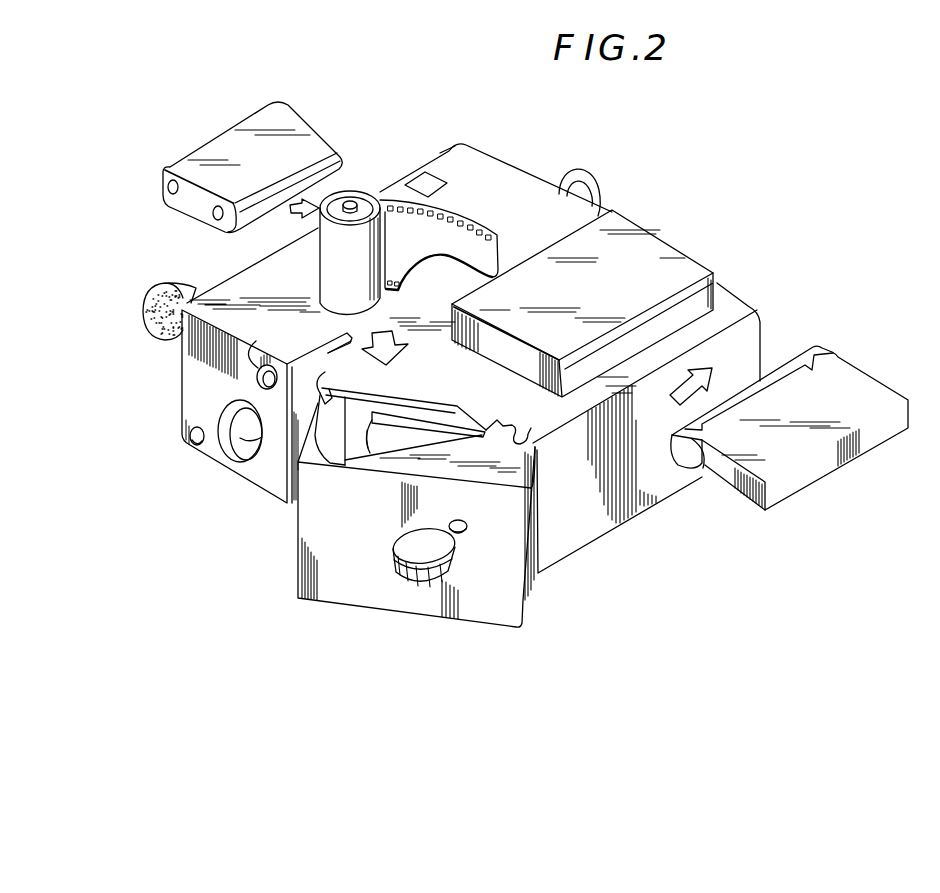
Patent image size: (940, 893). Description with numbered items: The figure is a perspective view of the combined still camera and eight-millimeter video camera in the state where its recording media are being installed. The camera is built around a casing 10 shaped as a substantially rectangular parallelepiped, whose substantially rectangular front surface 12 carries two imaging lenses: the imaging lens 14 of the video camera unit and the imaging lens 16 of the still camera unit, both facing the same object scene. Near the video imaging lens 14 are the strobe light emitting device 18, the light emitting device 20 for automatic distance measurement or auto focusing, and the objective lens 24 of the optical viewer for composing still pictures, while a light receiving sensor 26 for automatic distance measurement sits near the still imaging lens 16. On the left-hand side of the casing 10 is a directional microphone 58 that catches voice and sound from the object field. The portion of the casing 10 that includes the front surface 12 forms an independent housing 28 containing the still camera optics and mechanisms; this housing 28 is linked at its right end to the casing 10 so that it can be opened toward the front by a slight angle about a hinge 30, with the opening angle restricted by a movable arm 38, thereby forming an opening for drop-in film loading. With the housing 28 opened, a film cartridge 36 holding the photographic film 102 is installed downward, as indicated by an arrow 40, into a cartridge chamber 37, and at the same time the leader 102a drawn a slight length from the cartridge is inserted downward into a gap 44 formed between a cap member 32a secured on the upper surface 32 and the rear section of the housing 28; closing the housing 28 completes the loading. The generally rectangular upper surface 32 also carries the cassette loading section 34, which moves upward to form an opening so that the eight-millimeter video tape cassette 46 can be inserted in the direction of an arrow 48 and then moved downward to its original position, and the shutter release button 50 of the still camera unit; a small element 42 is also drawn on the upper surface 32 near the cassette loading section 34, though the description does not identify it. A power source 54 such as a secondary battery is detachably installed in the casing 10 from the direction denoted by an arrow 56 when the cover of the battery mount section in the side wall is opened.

The casing 10 is at (215, 284).
The front surface 12 is at (186, 401).
The imaging lens 14 is at (234, 462).
The imaging lens 16 is at (423, 584).
The strobe light emitting device 18 is at (193, 352).
The light emitting device 20 is at (185, 448).
The objective lens 24 is at (247, 358).
The light receiving sensor 26 is at (463, 532).
The housing 28 is at (334, 582).
The hinge 30 is at (531, 441).
The upper surface 32 is at (487, 170).
The cap member 32a is at (338, 365).
The cassette loading section 34 is at (641, 245).
The film cartridge 36 is at (318, 270).
The cartridge chamber 37 is at (340, 445).
The movable arm 38 is at (324, 386).
The arrow 40 is at (400, 348).
The hinge 42 is at (590, 175).
The gap 44 is at (433, 414).
The video tape cassette 46 is at (704, 478).
The arrow 48 is at (676, 392).
The shutter release button 50 is at (421, 170).
The power source 54 is at (328, 136).
The arrow 56 is at (290, 210).
The microphone 58 is at (157, 296).
The photographic film 102 is at (392, 200).
The leader 102a is at (467, 232).